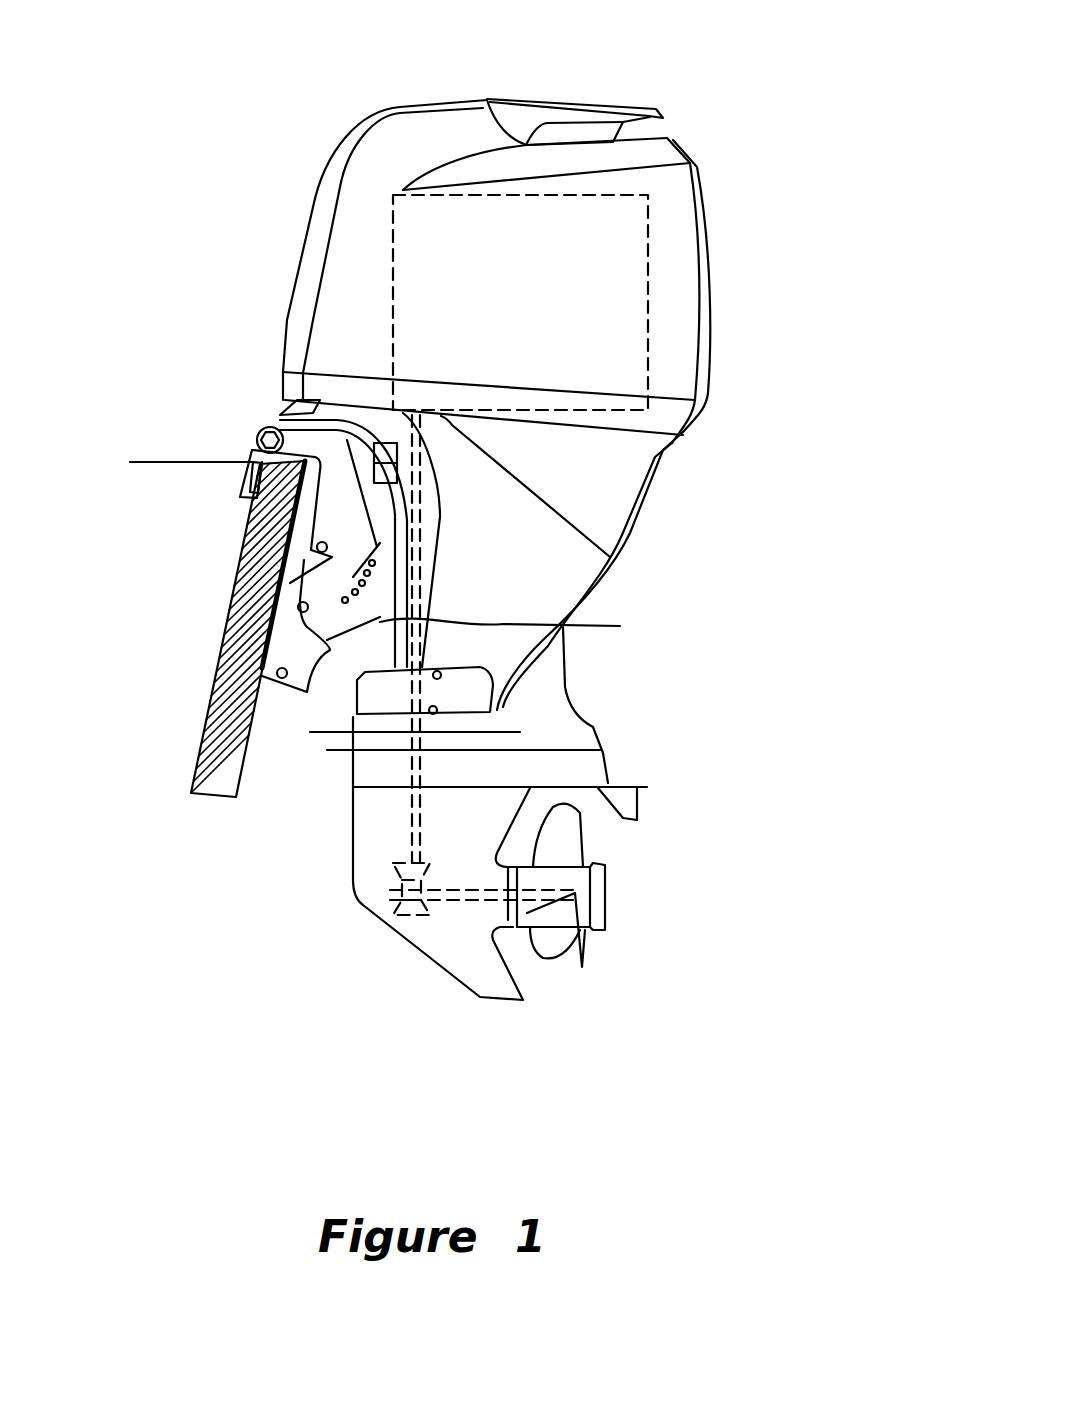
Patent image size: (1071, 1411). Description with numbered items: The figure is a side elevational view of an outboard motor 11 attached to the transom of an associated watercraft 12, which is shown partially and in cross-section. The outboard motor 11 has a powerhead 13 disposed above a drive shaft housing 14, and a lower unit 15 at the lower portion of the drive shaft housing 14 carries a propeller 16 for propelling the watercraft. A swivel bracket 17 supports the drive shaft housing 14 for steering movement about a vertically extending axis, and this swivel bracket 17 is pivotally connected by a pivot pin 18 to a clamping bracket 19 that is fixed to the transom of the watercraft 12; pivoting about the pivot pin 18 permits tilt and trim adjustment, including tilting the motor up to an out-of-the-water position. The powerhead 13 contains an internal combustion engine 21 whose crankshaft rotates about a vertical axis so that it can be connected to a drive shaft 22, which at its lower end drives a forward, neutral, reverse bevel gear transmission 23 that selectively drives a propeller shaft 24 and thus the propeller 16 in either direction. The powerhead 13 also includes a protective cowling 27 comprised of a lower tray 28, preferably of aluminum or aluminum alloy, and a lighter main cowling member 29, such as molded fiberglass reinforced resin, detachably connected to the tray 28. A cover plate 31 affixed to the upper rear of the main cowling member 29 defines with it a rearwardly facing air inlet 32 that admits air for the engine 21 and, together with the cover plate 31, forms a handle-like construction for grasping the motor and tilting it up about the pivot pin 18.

The outboard motor 11 is at (806, 159).
The watercraft 12 is at (232, 648).
The powerhead 13 is at (253, 293).
The drive shaft housing 14 is at (622, 493).
The lower unit 15 is at (367, 833).
The propeller 16 is at (570, 847).
The swivel bracket 17 is at (478, 540).
The pivot pin 18 is at (247, 430).
The clamping bracket 19 is at (293, 655).
The internal combustion engine 21 is at (643, 297).
The drive shaft 22 is at (425, 533).
The bevel gear transmission 23 is at (384, 905).
The propeller shaft 24 is at (467, 900).
The protective cowling 27 is at (313, 210).
The lower tray 28 is at (678, 412).
The main cowling member 29 is at (673, 215).
The cover plate 31 is at (527, 95).
The air inlet 32 is at (657, 130).